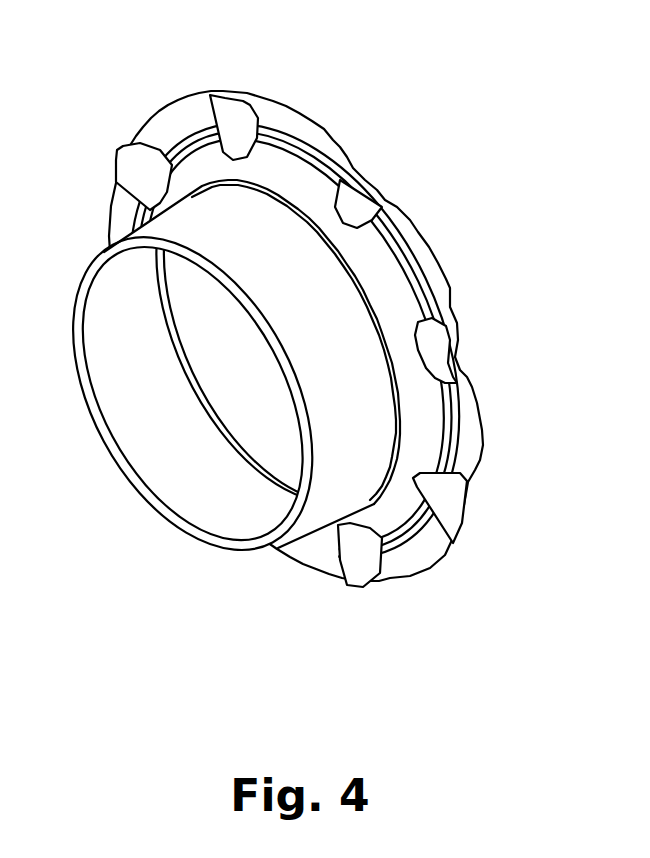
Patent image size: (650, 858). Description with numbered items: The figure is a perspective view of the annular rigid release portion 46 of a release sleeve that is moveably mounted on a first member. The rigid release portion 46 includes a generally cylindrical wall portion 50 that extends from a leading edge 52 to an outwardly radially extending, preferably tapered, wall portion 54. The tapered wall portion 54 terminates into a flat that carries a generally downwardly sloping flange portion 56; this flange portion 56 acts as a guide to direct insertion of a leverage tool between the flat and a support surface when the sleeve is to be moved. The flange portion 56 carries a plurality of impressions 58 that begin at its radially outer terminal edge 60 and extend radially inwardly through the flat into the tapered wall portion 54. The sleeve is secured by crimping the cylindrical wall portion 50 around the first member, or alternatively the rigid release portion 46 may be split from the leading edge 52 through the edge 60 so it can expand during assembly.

The rigid release portion 46 is at (420, 143).
The cylindrical wall portion 50 is at (337, 473).
The leading edge 52 is at (122, 453).
The tapered wall portion 54 is at (418, 424).
The flange portion 56 is at (173, 123).
The impressions 58 is at (220, 97).
The radially outer terminal edge 60 is at (447, 297).